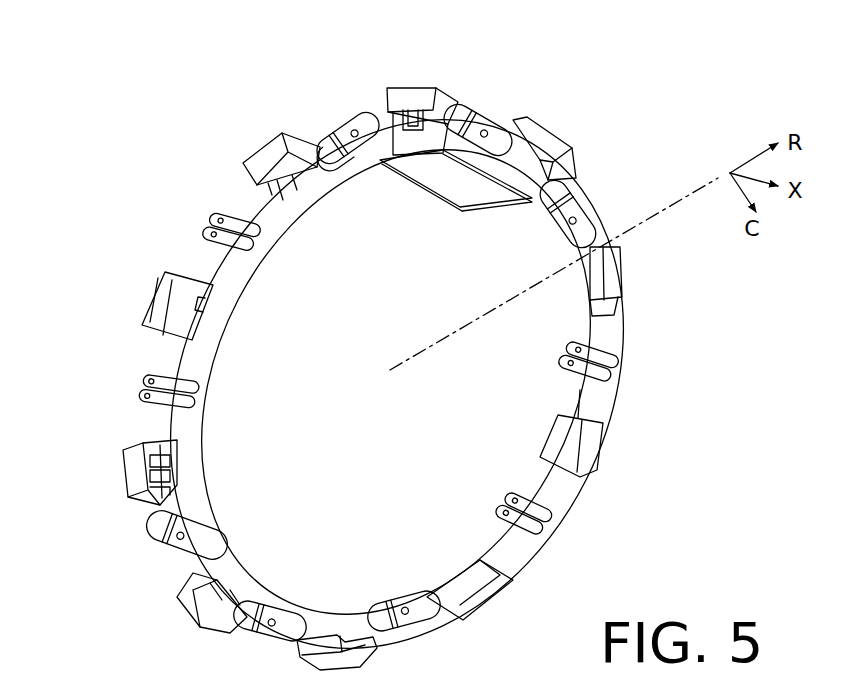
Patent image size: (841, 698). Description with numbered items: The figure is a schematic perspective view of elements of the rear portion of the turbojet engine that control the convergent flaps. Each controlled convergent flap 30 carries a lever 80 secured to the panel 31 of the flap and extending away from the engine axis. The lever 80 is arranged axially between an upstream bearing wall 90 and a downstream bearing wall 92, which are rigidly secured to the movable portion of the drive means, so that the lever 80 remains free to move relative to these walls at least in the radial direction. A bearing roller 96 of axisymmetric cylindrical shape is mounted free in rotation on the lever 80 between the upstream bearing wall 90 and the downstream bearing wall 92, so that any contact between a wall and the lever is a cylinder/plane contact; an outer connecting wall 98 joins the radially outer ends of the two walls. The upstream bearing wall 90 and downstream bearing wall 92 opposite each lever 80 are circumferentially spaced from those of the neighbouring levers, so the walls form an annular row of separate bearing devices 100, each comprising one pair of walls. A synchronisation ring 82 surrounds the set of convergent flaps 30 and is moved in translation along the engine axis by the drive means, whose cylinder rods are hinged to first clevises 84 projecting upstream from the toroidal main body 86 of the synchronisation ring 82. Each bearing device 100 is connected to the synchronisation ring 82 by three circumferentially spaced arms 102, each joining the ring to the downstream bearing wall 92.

The controlled convergent flap 30 is at (412, 190).
The panel 31 is at (452, 195).
The lever 80 is at (412, 142).
The synchronisation ring 82 is at (632, 335).
The first clevis 84 is at (565, 365).
The main body 86 is at (600, 400).
The upstream bearing wall 90 is at (403, 92).
The downstream bearing wall 92 is at (275, 185).
The bearing roller 96 is at (412, 118).
The outer connecting wall 98 is at (555, 137).
The bearing device 100 is at (140, 295).
The arm 102 is at (182, 490).